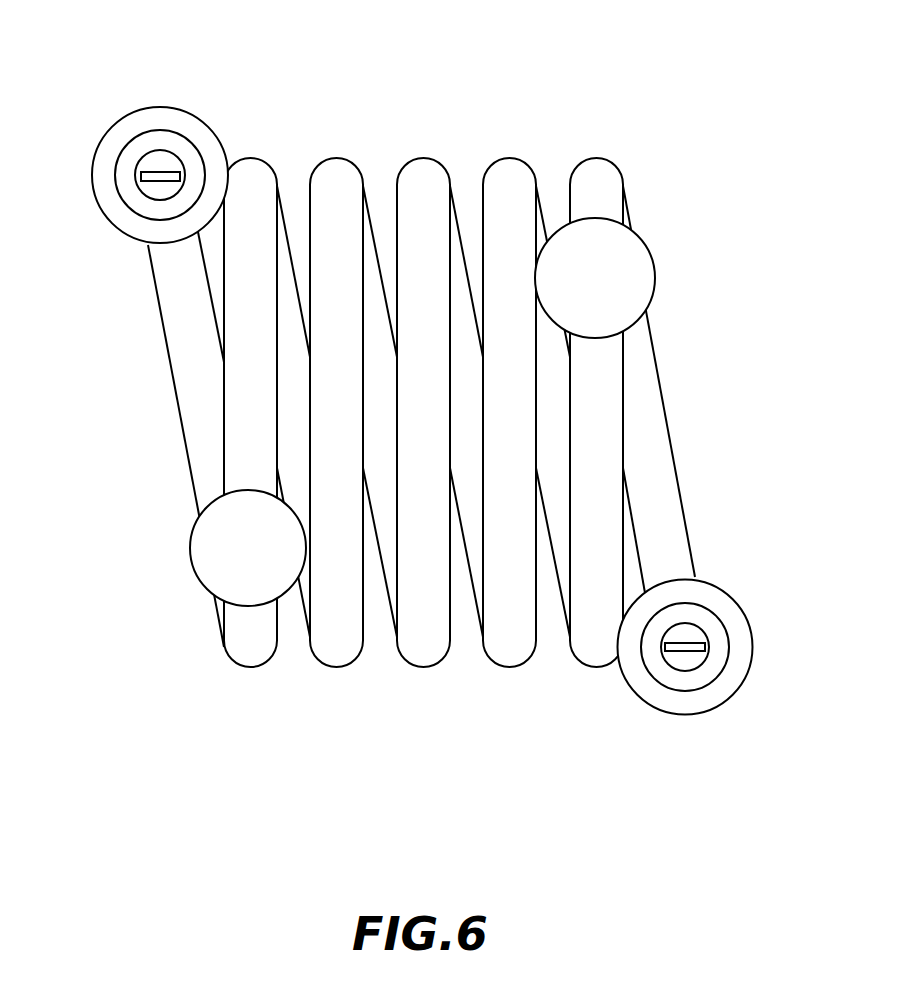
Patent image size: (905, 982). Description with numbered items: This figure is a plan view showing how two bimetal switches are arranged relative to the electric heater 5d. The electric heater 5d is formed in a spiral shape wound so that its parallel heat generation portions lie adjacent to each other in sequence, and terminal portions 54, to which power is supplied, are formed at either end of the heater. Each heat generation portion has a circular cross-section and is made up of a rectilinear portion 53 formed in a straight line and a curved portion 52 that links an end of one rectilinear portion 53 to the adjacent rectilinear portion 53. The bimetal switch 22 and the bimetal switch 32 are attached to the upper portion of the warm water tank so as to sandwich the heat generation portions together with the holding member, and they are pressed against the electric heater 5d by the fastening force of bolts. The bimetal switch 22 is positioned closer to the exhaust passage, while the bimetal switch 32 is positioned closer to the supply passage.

The electric heater 5d is at (405, 414).
The curved portion 52 is at (253, 158).
The rectilinear portion 53 is at (328, 265).
The terminal portion 54 is at (158, 172).
The bimetal switch 22 is at (612, 283).
The bimetal switch 32 is at (215, 550).